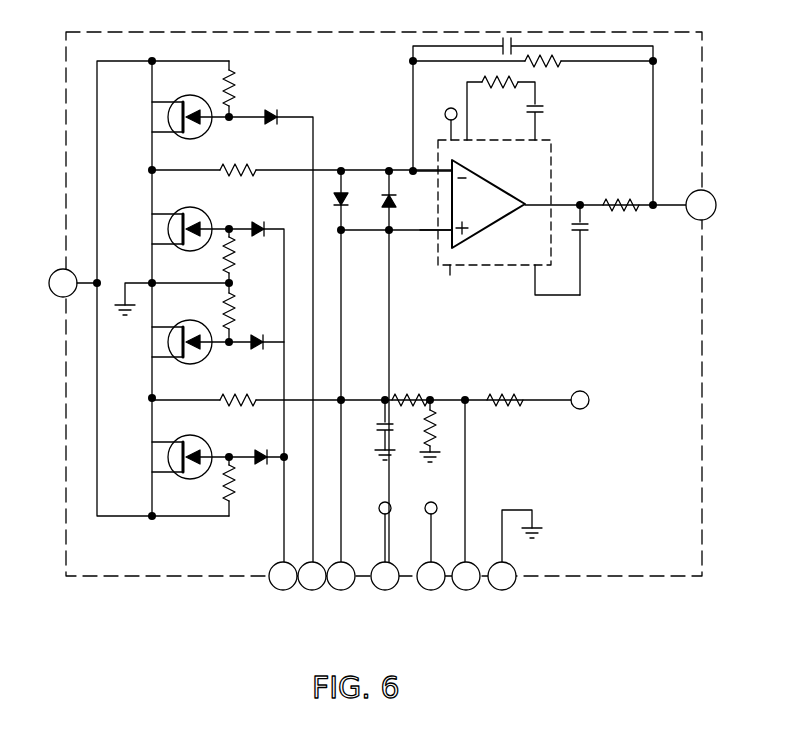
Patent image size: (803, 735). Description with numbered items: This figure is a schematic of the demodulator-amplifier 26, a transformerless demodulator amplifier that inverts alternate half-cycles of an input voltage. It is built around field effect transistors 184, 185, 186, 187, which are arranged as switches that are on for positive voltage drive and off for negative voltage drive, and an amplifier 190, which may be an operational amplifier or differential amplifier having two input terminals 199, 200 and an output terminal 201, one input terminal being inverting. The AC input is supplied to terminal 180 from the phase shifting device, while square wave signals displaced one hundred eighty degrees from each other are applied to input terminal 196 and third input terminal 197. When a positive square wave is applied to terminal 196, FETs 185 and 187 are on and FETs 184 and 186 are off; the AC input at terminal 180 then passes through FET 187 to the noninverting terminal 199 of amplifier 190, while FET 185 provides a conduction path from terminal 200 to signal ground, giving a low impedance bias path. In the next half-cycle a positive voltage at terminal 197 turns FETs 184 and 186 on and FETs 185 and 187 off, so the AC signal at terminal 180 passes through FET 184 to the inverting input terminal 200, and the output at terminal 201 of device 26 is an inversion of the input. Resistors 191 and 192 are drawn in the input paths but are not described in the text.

The demodulator-amplifier 26 is at (65, 163).
The input terminal 180 is at (55, 272).
The field effect transistor 184 is at (207, 98).
The field effect transistor 185 is at (207, 208).
The field effect transistor 186 is at (207, 322).
The field effect transistor 187 is at (207, 436).
The amplifier 190 is at (482, 226).
The resistor 191 is at (240, 176).
The resistor 192 is at (235, 402).
The input terminal 196 is at (273, 586).
The third input terminal 197 is at (306, 588).
The noninverting terminal 199 is at (446, 231).
The inverting amplifier input terminal 200 is at (462, 166).
The output terminal 201 is at (712, 198).